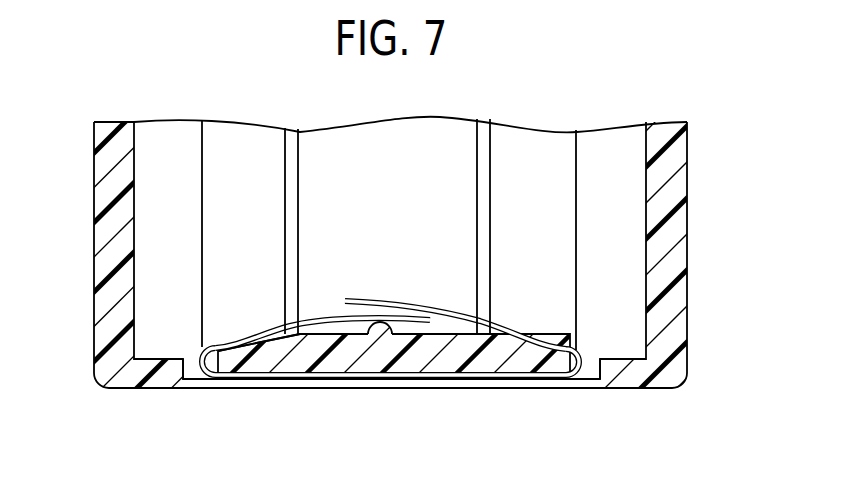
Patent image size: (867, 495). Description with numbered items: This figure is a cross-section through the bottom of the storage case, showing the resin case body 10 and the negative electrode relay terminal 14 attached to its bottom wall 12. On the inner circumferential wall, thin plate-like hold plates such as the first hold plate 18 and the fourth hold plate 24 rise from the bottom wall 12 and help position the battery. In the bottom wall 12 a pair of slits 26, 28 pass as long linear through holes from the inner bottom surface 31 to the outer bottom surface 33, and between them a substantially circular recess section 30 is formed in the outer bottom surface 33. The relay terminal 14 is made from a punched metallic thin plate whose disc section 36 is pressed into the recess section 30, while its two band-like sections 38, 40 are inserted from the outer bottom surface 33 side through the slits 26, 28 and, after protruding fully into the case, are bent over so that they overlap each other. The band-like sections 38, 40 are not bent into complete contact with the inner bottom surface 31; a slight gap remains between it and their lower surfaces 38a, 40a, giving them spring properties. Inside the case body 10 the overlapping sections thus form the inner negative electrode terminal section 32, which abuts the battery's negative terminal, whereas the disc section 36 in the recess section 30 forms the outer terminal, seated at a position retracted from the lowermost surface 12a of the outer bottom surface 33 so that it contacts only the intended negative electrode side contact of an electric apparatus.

The case body 10 is at (688, 183).
The bottom wall 12 is at (133, 378).
The lowermost surface 12a is at (653, 389).
The negative electrode relay terminal 14 is at (535, 333).
The first hold plate 18 is at (270, 174).
The fourth hold plate 24 is at (513, 173).
The slit 26 is at (190, 386).
The slit 28 is at (594, 379).
The recess section 30 is at (505, 378).
The inner bottom surface 31 is at (381, 327).
The inner negative electrode terminal section 32 is at (391, 272).
The outer bottom surface 33 is at (620, 389).
The disc section 36 is at (282, 380).
The band-like section 38 is at (400, 297).
The lower surface 38a is at (442, 335).
The band-like section 40 is at (423, 238).
The lower surface 40a is at (318, 336).